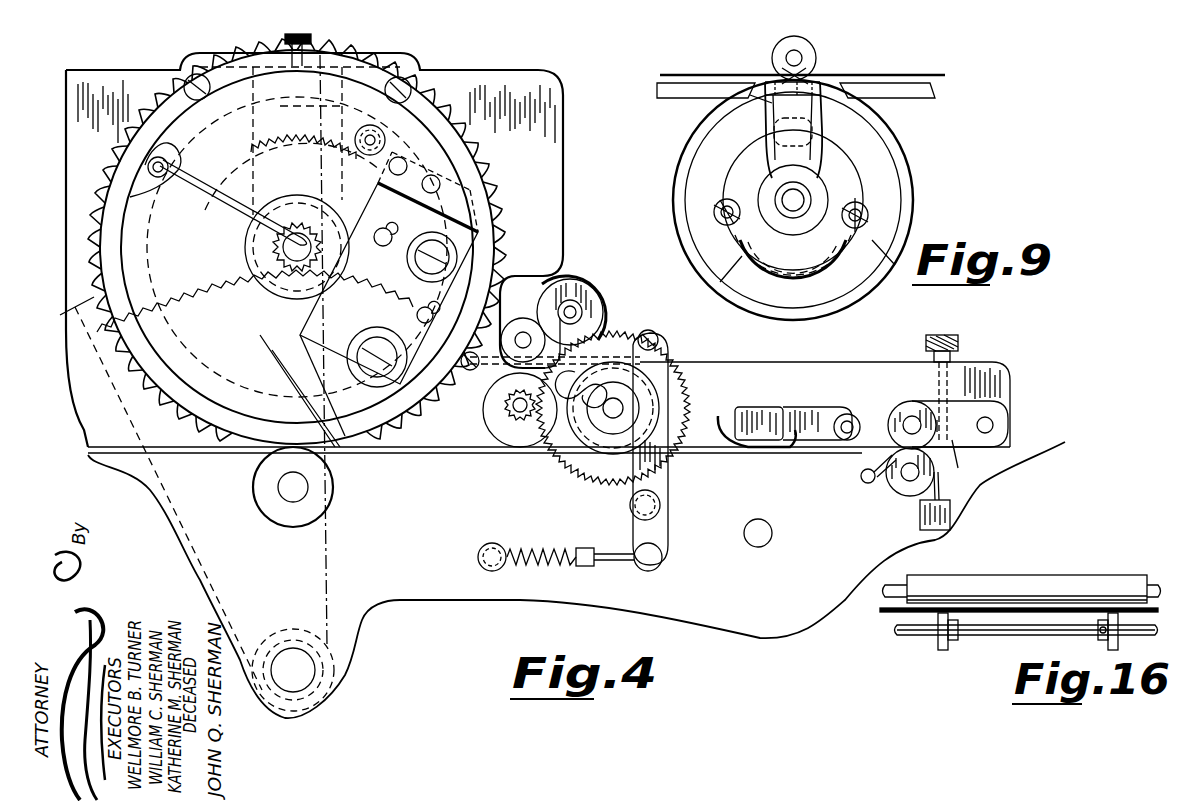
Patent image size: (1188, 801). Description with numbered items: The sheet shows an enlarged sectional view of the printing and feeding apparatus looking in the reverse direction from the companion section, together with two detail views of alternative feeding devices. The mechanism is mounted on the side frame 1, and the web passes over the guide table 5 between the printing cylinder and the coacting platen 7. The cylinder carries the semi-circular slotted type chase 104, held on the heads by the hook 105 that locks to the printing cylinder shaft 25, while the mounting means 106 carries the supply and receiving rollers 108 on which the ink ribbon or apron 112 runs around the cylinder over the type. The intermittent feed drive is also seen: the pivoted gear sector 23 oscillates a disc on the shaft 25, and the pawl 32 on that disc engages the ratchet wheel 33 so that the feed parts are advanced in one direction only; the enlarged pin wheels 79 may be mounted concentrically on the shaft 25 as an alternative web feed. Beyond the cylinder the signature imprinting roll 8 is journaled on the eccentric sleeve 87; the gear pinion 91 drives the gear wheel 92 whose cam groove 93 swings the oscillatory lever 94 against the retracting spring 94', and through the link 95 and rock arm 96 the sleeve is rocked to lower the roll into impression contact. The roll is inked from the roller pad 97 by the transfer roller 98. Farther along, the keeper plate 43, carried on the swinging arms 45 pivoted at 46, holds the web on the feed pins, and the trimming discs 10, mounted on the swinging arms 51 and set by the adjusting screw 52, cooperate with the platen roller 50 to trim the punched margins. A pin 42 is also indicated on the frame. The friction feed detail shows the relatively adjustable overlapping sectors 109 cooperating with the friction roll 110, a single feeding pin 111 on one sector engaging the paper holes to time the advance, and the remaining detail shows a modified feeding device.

In FIG. 4, the side frame 1 is at (415, 598).
In FIG. 4, the guide table 5 is at (422, 452).
In FIG. 4, the platen 7 is at (272, 505).
In FIG. 4, the signature imprinting roll 8 is at (497, 432).
In FIG. 4, the trimming discs 10 is at (903, 408).
In FIG. 4, the gear sector 23 is at (314, 560).
In FIG. 4, the printing cylinder shaft 25 is at (285, 247).
In FIG. 4, the pawl 32 is at (304, 140).
In FIG. 4, the ratchet wheel 33 is at (233, 158).
In FIG. 4, the pin 42 is at (760, 547).
In FIG. 4, the keeper plate 43 is at (722, 420).
In FIG. 4, the swinging arms 45 is at (806, 422).
In FIG. 4, the pivot 46 is at (848, 416).
In FIG. 4, the platen roller 50 is at (906, 497).
In FIG. 4, the swinging arms 51 is at (967, 465).
In FIG. 4, the adjusting screw 52 is at (956, 344).
In FIG. 4, the enlarged pin wheels 79 is at (62, 313).
In FIG. 4, the eccentric sleeve 87 is at (519, 440).
In FIG. 4, the gear pinion 91 is at (512, 406).
In FIG. 4, the gear wheel 92 is at (676, 352).
In FIG. 4, the cam groove 93 is at (600, 462).
In FIG. 4, the oscillatory lever 94 is at (633, 452).
In FIG. 4, the retracting spring 94' is at (556, 542).
In FIG. 4, the link 95 is at (622, 340).
In FIG. 4, the rock arm 96 is at (480, 380).
In FIG. 4, the roller pad 97 is at (520, 293).
In FIG. 4, the transfer roller 98 is at (585, 292).
In FIG. 4, the type chase 104 is at (162, 380).
In FIG. 4, the hook 105 is at (183, 180).
In FIG. 4, the mounting means 106 is at (300, 325).
In FIG. 4, the supply and receiving rollers 108 is at (462, 228).
In FIG. 9, the overlapping sectors 109 is at (814, 158).
In FIG. 9, the friction roll 110 is at (779, 50).
In FIG. 9, the feeding pin 111 is at (810, 72).
In FIG. 4, the ink ribbon or apron 112 is at (392, 455).